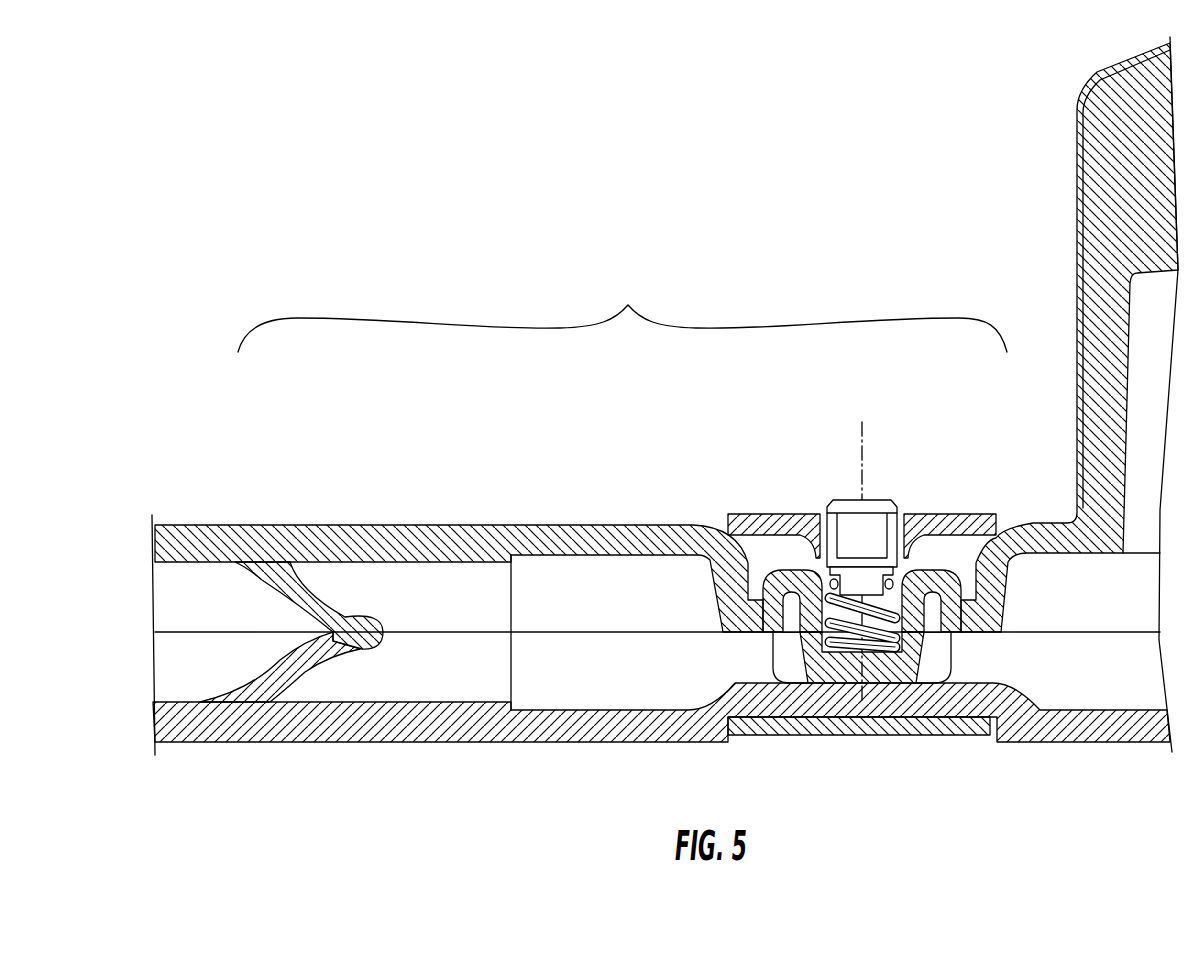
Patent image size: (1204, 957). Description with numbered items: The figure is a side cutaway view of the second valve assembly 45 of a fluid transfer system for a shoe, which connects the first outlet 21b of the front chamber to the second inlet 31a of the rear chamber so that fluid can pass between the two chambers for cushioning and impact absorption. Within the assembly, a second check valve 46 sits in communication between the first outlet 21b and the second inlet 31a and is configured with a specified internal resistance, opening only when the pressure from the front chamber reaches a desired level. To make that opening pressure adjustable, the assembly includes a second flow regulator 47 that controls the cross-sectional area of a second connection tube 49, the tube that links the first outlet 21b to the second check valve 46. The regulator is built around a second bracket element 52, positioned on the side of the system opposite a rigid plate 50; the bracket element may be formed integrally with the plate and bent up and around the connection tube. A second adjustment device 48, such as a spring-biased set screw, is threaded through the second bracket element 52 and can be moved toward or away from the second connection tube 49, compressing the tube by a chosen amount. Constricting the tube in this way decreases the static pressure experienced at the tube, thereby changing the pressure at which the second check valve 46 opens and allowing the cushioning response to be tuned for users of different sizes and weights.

The first outlet 21b is at (186, 675).
The second inlet 31a is at (1069, 670).
The second valve assembly 45 is at (628, 305).
The second check valve 46 is at (348, 650).
The second flow regulator 47 is at (738, 484).
The second adjustment device 48 is at (877, 497).
The second connection tube 49 is at (748, 667).
The rigid plate 50 is at (902, 735).
The second bracket element 52 is at (792, 513).